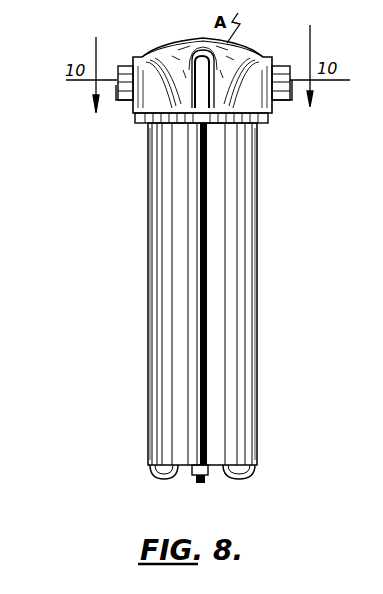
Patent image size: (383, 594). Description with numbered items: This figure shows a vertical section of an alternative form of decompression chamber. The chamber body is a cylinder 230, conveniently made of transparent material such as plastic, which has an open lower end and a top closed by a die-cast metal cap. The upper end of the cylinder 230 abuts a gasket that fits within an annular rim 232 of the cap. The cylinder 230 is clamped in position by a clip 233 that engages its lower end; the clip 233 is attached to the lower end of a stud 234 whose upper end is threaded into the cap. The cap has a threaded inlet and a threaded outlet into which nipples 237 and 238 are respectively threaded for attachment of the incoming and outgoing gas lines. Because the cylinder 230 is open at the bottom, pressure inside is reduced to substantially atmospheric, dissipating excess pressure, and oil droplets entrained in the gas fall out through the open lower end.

The cylinder 230 is at (253, 178).
The annular rim 232 is at (262, 126).
The clip 233 is at (240, 479).
The stud 234 is at (204, 292).
The nipple 237 is at (126, 68).
The nipple 238 is at (279, 68).